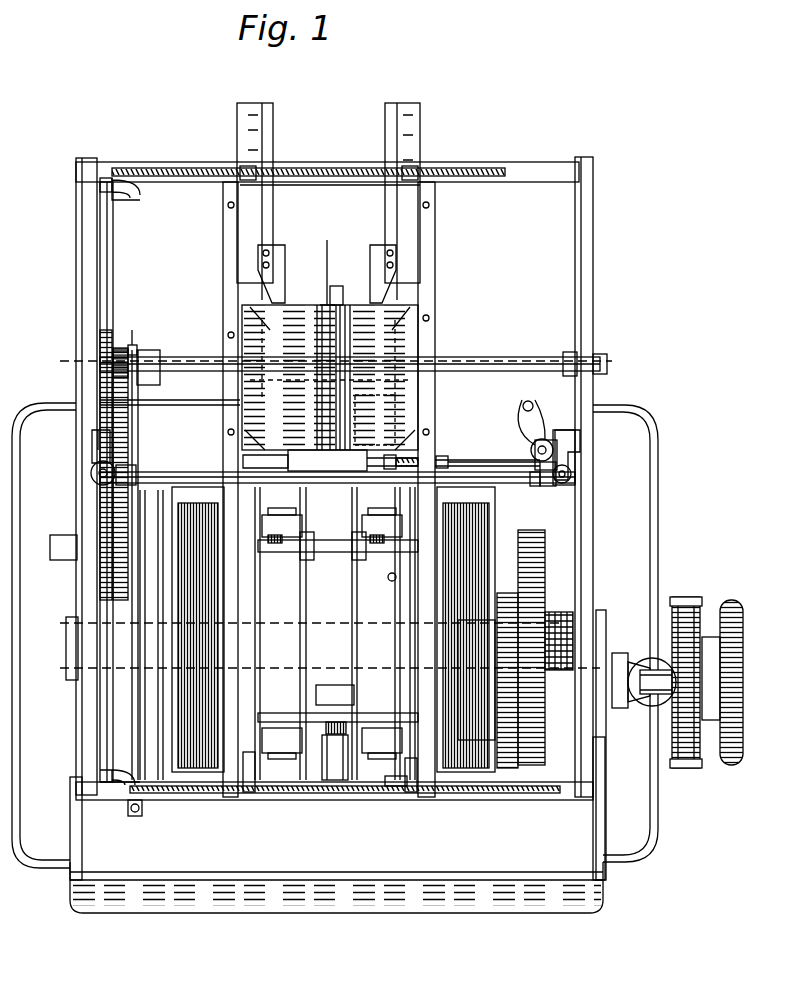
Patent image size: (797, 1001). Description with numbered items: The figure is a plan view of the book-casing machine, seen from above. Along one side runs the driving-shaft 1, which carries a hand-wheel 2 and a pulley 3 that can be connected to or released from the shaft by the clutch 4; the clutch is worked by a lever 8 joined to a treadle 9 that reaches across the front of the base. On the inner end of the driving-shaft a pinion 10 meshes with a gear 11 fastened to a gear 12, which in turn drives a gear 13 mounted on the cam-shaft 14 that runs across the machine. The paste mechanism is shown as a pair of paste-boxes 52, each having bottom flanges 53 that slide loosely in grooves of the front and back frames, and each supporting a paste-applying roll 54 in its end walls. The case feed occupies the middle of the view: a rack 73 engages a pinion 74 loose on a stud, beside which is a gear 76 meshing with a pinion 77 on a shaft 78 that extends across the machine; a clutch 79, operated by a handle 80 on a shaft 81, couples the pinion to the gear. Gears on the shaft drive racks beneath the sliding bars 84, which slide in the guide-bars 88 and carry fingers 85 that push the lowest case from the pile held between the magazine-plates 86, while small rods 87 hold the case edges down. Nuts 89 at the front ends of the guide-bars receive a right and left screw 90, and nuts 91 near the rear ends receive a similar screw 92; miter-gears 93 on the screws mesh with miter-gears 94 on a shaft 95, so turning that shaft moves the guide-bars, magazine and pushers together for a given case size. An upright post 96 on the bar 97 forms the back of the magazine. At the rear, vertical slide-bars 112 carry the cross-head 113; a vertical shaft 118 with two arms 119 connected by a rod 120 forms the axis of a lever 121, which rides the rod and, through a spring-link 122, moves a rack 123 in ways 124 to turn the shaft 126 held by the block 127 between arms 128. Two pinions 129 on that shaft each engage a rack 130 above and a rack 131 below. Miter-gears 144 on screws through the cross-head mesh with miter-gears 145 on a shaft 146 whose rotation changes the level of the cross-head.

The driving-shaft 1 is at (608, 658).
The hand-wheel 2 is at (735, 605).
The pulley 3 is at (688, 600).
The clutch 4 is at (640, 665).
The lever 8 is at (618, 708).
The treadle 9 is at (350, 900).
The pinion 10 is at (500, 690).
The gear 11 is at (500, 722).
The gear 12 is at (543, 712).
The gear 13 is at (390, 570).
The cam-shaft 14 is at (156, 680).
The paste-box 52 is at (196, 546).
The flanges 53 is at (184, 480).
The paste-applying roll 54 is at (335, 782).
The rack 73 is at (97, 520).
The pinion 74 is at (122, 348).
The gear 76 is at (100, 395).
The pinion 77 is at (100, 370).
The shaft 78 is at (176, 348).
The clutch 79 is at (145, 345).
The handle 80 is at (142, 815).
The shaft 81 is at (138, 620).
The sliding bars 84 is at (274, 120).
The fingers 85 is at (290, 258).
The magazine-plates 86 is at (240, 338).
The small rods 87 is at (240, 470).
The guide-bars 88 is at (238, 265).
The nuts 89 is at (250, 796).
The screw 90 is at (392, 790).
The nuts 91 is at (244, 170).
The screw 92 is at (503, 178).
The miter-gears 93 is at (132, 192).
The miter-gears 94 is at (106, 188).
The shaft 95 is at (110, 288).
The upright post 96 is at (340, 288).
The bar 97 is at (327, 260).
The slide-bars 112 is at (92, 450).
The cross-head 113 is at (156, 470).
The vertical shaft 118 is at (578, 448).
The arms 119 is at (562, 364).
The rod 120 is at (530, 408).
The lever 121 is at (548, 420).
The spring-link 122 is at (468, 458).
The rack 123 is at (378, 445).
The ways 124 is at (337, 440).
The shaft 126 is at (310, 462).
The block 127 is at (338, 703).
The arms 128 is at (302, 632).
The pinions 129 is at (355, 594).
The rack 130 is at (358, 722).
The rack 131 is at (290, 556).
The miter-gears 144 is at (116, 480).
The miter-gears 145 is at (91, 470).
The shaft 146 is at (537, 488).